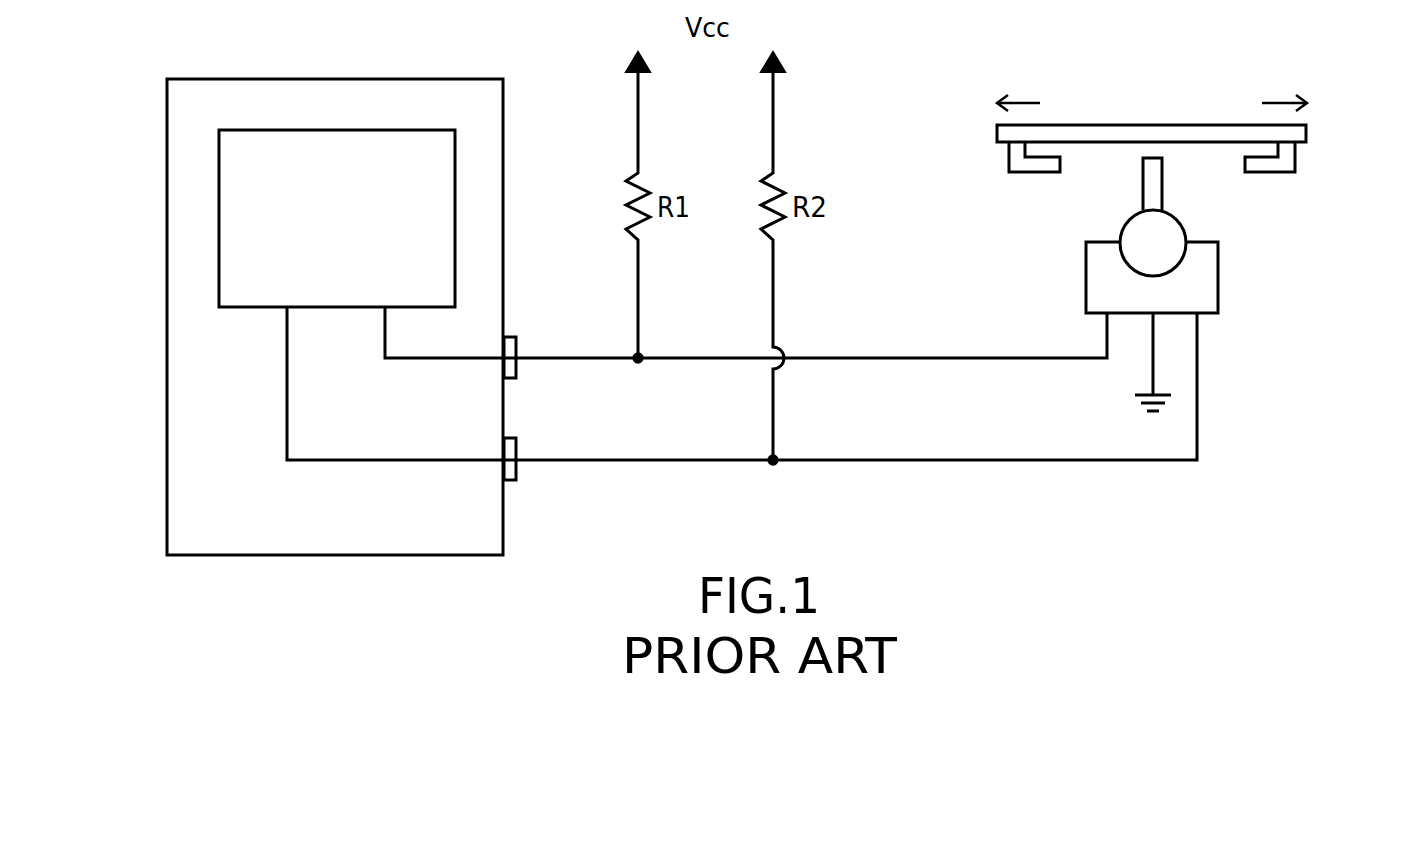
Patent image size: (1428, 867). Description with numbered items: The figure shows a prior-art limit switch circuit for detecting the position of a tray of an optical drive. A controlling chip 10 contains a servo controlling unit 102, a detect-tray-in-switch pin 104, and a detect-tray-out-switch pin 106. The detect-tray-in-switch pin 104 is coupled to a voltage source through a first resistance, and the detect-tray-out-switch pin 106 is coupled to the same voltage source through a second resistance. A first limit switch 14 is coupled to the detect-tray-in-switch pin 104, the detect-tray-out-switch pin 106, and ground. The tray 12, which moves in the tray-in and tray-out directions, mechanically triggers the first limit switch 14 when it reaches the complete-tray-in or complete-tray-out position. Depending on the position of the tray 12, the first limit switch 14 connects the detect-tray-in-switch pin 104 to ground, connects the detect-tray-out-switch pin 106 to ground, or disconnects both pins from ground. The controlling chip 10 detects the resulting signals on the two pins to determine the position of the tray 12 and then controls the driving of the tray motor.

The controlling chip 10 is at (189, 442).
The servo controlling unit 102 is at (387, 145).
The detect-tray-in-switch pin 104 is at (511, 338).
The detect-tray-out-switch pin 106 is at (511, 440).
The tray 12 is at (1173, 133).
The first limit switch 14 is at (1208, 285).